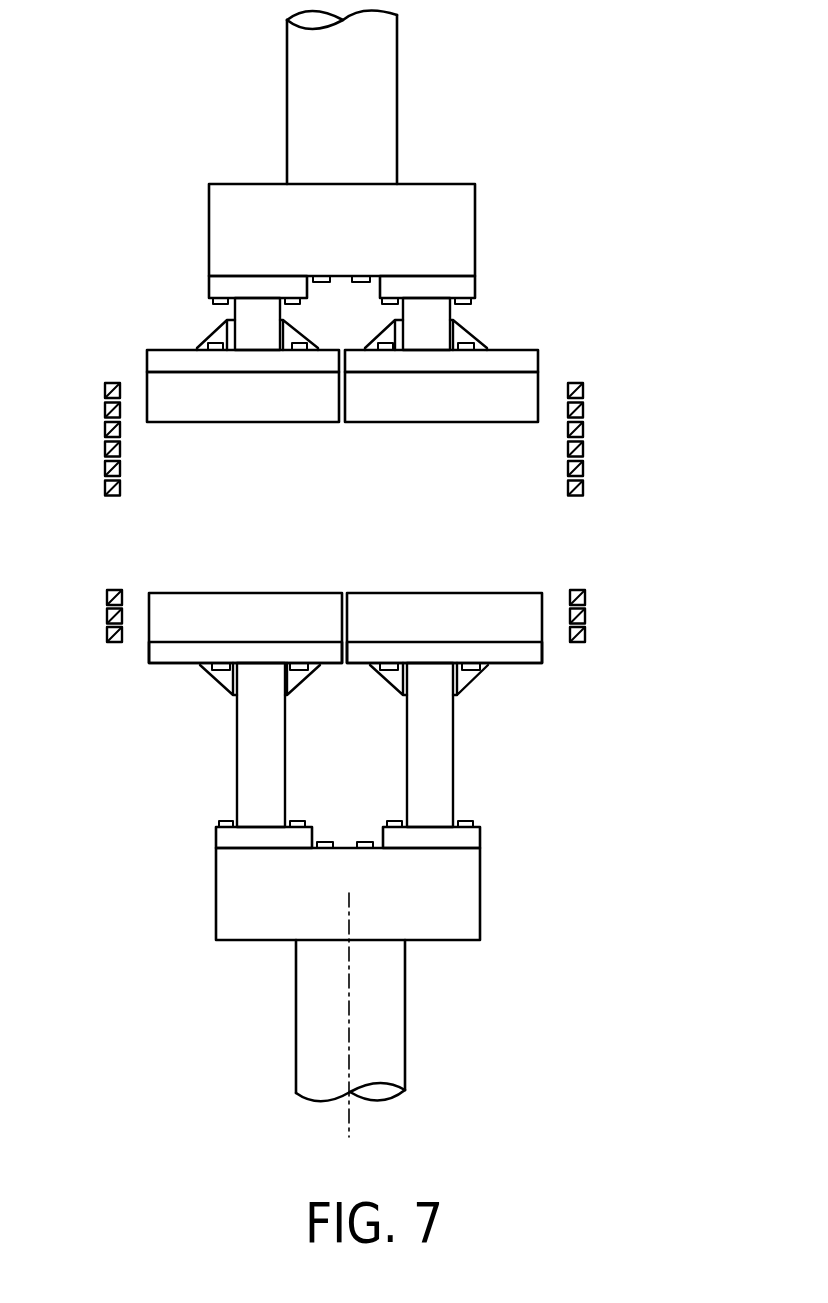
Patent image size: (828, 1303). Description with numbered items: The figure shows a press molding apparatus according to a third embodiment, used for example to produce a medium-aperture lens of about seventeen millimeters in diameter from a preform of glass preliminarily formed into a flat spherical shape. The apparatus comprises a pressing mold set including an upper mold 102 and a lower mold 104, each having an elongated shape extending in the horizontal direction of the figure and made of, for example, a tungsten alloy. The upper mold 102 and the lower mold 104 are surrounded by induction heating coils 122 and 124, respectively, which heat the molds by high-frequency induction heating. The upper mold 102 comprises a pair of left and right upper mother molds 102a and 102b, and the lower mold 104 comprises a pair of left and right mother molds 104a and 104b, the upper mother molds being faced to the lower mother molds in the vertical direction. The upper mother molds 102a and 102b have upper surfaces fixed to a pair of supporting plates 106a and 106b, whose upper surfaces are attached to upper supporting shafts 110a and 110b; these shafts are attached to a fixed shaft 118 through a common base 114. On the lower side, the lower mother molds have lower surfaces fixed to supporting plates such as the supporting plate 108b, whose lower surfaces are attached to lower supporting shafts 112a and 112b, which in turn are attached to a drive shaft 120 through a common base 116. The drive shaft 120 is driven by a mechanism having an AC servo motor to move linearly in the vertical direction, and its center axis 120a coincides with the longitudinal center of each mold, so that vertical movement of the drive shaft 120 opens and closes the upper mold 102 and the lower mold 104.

The upper mold 102 is at (342, 453).
The upper mother mold 102a is at (282, 410).
The upper mother mold 102b is at (441, 428).
The lower mold 104 is at (339, 576).
The lower mother mold 104a is at (217, 602).
The lower mother mold 104b is at (413, 600).
The supporting plate 106a is at (172, 362).
The supporting plate 106b is at (517, 358).
The supporting plate 108b is at (167, 653).
The upper supporting shaft 110a is at (244, 308).
The upper supporting shaft 110b is at (433, 317).
The lower supporting shaft 112a is at (252, 765).
The lower supporting shaft 112b is at (443, 763).
The common base 114 is at (440, 220).
The common base 116 is at (468, 890).
The fixed shaft 118 is at (370, 103).
The drive shaft 120 is at (390, 1010).
The center axis 120a is at (352, 1128).
The induction heating coil 122 is at (584, 403).
The induction heating coil 124 is at (584, 587).